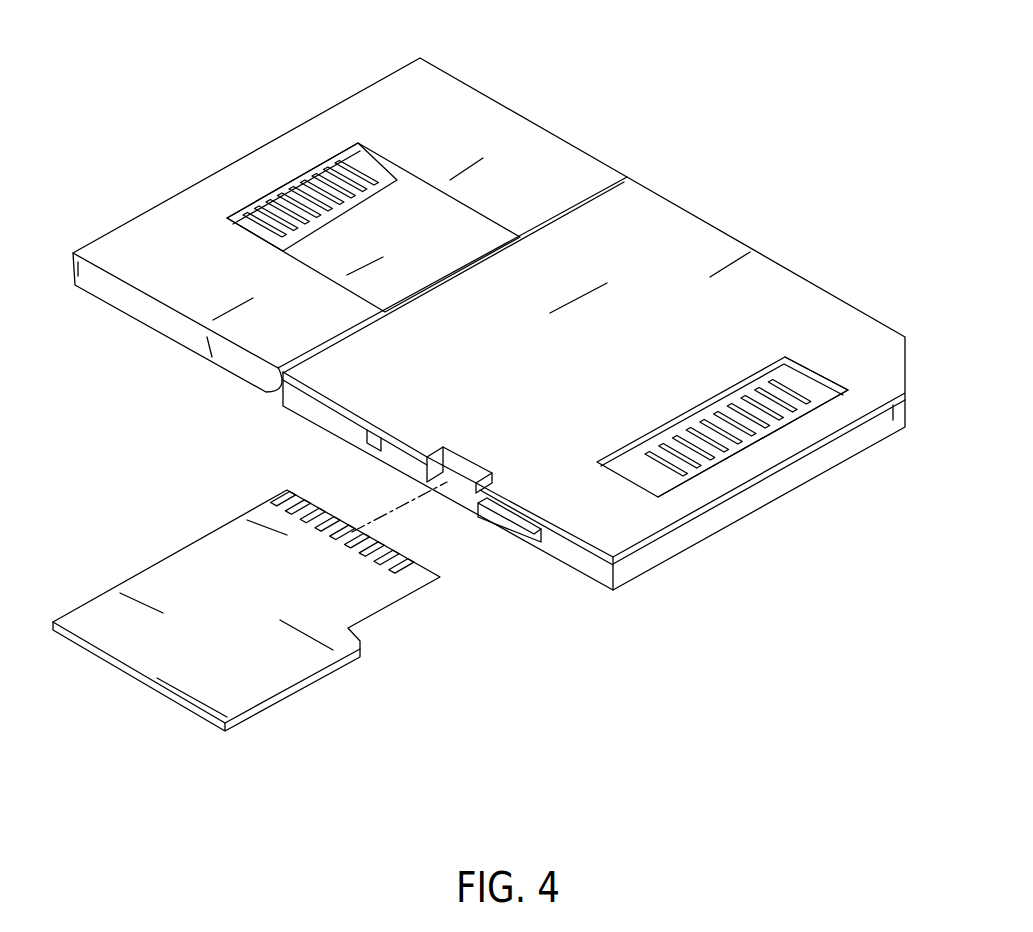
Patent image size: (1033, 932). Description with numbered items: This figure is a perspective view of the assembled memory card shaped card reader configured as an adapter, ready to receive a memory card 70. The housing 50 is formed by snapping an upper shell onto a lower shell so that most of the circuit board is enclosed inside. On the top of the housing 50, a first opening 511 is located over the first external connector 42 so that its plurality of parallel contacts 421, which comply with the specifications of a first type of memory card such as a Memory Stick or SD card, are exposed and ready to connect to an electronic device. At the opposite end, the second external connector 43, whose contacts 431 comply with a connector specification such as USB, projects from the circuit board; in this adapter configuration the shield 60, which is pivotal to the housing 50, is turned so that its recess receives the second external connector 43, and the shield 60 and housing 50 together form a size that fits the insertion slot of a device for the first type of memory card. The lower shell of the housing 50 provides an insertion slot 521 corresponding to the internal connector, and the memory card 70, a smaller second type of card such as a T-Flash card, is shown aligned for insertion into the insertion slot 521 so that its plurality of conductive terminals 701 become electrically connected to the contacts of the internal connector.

The housing 50 is at (690, 212).
The shield 60 is at (473, 125).
The first external connector 42 is at (623, 443).
The contacts 421 is at (752, 432).
The second external connector 43 is at (344, 219).
The contacts 431 is at (320, 184).
The first opening 511 is at (800, 362).
The insertion slot 521 is at (528, 523).
The memory card 70 is at (193, 571).
The conductive terminals 701 is at (285, 497).